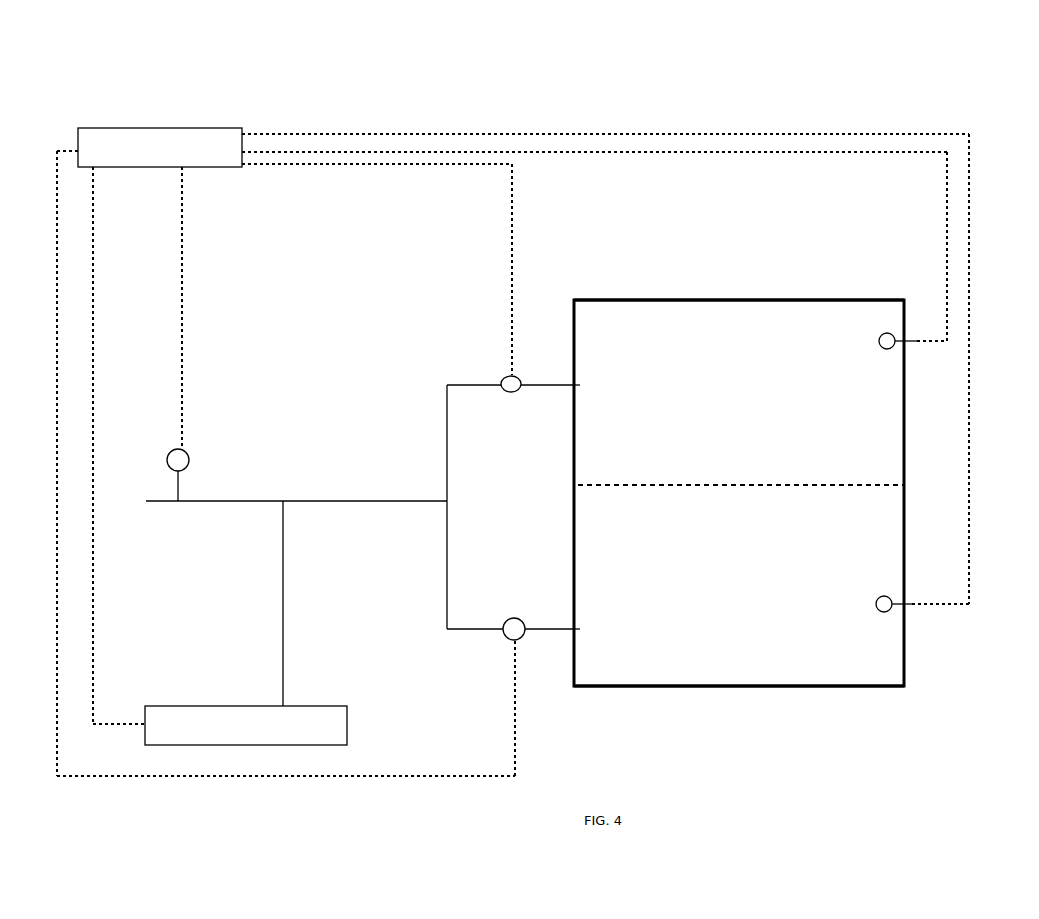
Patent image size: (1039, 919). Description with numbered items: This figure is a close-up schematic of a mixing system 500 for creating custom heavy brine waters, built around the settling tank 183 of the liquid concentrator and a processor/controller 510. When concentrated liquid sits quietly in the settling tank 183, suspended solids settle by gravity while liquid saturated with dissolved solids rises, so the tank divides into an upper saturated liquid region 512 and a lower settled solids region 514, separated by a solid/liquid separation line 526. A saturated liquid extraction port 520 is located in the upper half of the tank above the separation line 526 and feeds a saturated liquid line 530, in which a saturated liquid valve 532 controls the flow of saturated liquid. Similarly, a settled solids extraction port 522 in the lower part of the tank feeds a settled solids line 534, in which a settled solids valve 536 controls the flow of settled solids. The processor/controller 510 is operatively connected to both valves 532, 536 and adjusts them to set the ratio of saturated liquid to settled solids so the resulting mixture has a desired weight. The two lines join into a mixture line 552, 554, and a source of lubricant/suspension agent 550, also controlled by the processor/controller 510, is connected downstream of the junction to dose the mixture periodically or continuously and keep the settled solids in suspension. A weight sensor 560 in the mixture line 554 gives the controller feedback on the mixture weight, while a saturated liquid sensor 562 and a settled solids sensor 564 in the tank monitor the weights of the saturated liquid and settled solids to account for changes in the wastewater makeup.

The mixing system 500 is at (630, 77).
The processor/controller 510 is at (231, 128).
The saturated liquid region 512 is at (679, 360).
The settling tank 183 is at (876, 300).
The solid/liquid separation line 526 is at (735, 485).
The settled solids region 514 is at (748, 657).
The saturated liquid extraction port 520 is at (574, 385).
The settled solids extraction port 522 is at (574, 629).
The saturated liquid line 530 is at (460, 385).
The saturated liquid valve 532 is at (508, 373).
The settled solids line 534 is at (474, 629).
The settled solids valve 536 is at (522, 618).
The source of lubricant/suspension agent 550 is at (348, 724).
The mixture line 552 is at (283, 590).
The mixture line 554 is at (200, 502).
The weight sensor 560 is at (190, 455).
The saturated liquid sensor 562 is at (878, 345).
The settled solids sensor 564 is at (876, 610).